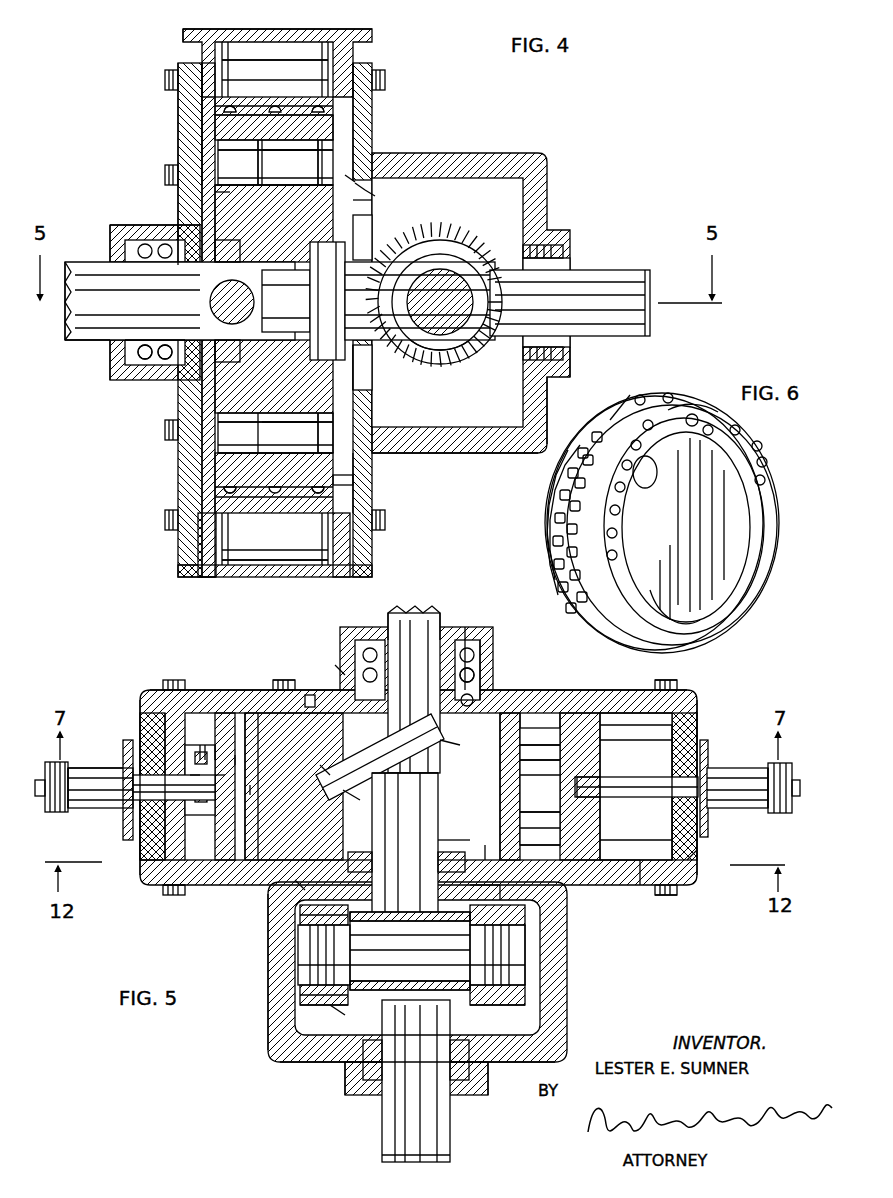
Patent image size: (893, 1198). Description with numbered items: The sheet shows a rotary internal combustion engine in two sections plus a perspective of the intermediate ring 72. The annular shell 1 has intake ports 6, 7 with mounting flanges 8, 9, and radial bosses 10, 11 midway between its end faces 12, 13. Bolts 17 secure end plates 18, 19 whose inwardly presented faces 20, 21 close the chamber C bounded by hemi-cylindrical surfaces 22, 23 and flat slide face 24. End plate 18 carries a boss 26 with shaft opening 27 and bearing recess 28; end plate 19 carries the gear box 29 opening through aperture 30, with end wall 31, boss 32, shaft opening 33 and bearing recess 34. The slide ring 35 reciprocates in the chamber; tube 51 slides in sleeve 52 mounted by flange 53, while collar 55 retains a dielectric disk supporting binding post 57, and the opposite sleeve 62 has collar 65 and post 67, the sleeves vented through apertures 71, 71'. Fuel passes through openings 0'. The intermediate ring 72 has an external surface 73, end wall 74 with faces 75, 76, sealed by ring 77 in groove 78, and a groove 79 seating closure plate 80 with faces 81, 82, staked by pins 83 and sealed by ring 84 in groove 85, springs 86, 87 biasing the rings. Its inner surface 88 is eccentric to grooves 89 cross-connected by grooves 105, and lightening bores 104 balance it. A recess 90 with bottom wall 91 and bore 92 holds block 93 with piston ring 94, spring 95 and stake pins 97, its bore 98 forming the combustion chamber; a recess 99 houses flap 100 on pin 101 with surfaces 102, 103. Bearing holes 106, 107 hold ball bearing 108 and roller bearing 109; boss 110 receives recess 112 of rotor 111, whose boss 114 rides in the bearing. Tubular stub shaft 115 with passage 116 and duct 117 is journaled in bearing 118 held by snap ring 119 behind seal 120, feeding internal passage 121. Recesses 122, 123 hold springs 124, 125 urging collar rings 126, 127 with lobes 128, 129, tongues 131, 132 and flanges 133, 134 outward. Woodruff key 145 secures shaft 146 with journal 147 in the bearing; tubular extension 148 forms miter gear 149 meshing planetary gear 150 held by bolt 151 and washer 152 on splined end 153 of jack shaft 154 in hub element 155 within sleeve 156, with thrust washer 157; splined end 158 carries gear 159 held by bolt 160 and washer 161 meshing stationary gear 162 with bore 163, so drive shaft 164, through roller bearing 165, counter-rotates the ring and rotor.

In FIG. 4, the shell 1 is at (333, 32).
In FIG. 5, the shell 1 is at (138, 858).
In FIG. 4, the intake port 6 is at (265, 55).
In FIG. 4, the intake port 7 is at (278, 574).
In FIG. 4, the mounting flange 8 is at (372, 34).
In FIG. 4, the mounting flange 9 is at (192, 574).
In FIG. 5, the cylindrical boss 10 is at (140, 732).
In FIG. 5, the cylindrical boss 11 is at (698, 738).
In FIG. 5, the end face 12 is at (152, 692).
In FIG. 5, the end face 13 is at (162, 882).
In FIG. 5, the bolts 17 is at (678, 683).
In FIG. 4, the end plate 18 is at (185, 104).
In FIG. 5, the end plate 18 is at (603, 692).
In FIG. 4, the end plate 19 is at (372, 120).
In FIG. 5, the end plate 19 is at (640, 862).
In FIG. 4, the inwardly presented face 20 is at (205, 130).
In FIG. 5, the inwardly presented face 20 is at (630, 712).
In FIG. 4, the inwardly presented face 21 is at (345, 142).
In FIG. 5, the inwardly presented face 21 is at (615, 862).
In FIG. 5, the hemi-cylindrical surface 22 is at (138, 840).
In FIG. 5, the hemi-cylindrical surface 23 is at (698, 858).
In FIG. 5, the flat slide face 24 is at (640, 722).
In FIG. 4, the boss 26 is at (170, 240).
In FIG. 5, the boss 26 is at (490, 655).
In FIG. 4, the shaft opening 27 is at (215, 335).
In FIG. 5, the shaft opening 27 is at (472, 698).
In FIG. 4, the bearing recess 28 is at (172, 355).
In FIG. 5, the bearing recess 28 is at (472, 670).
In FIG. 4, the gear box 29 is at (515, 453).
In FIG. 5, the gear box 29 is at (563, 1035).
In FIG. 4, the circular aperture 30 is at (365, 397).
In FIG. 5, the circular aperture 30 is at (515, 900).
In FIG. 4, the end wall 31 is at (540, 420).
In FIG. 5, the end wall 31 is at (322, 1062).
In FIG. 4, the boss 32 is at (562, 375).
In FIG. 5, the boss 32 is at (490, 1090).
In FIG. 4, the shaft opening 33 is at (562, 353).
In FIG. 4, the bearing recess 34 is at (562, 250).
In FIG. 4, the slide ring 35 is at (215, 505).
In FIG. 5, the slide ring 35 is at (598, 838).
In FIG. 5, the cylindrical tube 51 is at (145, 785).
In FIG. 5, the sleeve 52 is at (88, 810).
In FIG. 5, the flange 53 is at (126, 812).
In FIG. 5, the flange collar 55 is at (52, 812).
In FIG. 5, the binding post 57 is at (38, 788).
In FIG. 5, the sleeve 62 is at (730, 768).
In FIG. 5, the flange collar 65 is at (781, 798).
In FIG. 5, the binding post 67 is at (797, 782).
In FIG. 5, the vent aperture 71 is at (75, 768).
In FIG. 5, the vent aperture 71' is at (760, 801).
In FIG. 4, the intermediate ring 72 is at (205, 146).
In FIG. 6, the intermediate ring 72 is at (783, 522).
In FIG. 6, the external cylindrical surface 73 is at (552, 556).
In FIG. 5, the external cylindrical surface 73 is at (604, 772).
In FIG. 6, the end wall 74 is at (693, 528).
In FIG. 5, the end wall 74 is at (530, 705).
In FIG. 4, the outer face 75 is at (210, 186).
In FIG. 6, the outer face 75 is at (628, 402).
In FIG. 5, the outer face 75 is at (562, 712).
In FIG. 4, the inner face 76 is at (222, 167).
In FIG. 6, the inner face 76 is at (688, 570).
In FIG. 5, the inner face 76 is at (540, 769).
In FIG. 4, the sealing ring 77 is at (185, 228).
In FIG. 4, the axial groove 78 is at (205, 383).
In FIG. 6, the circular groove 79 is at (762, 568).
In FIG. 4, the closure plate 80 is at (358, 456).
In FIG. 5, the closure plate 80 is at (530, 845).
In FIG. 4, the outer face 81 is at (340, 432).
In FIG. 4, the inner face 82 is at (320, 427).
In FIG. 4, the pins 83 is at (350, 480).
In FIG. 4, the sealing ring 84 is at (362, 186).
In FIG. 4, the circular groove 85 is at (372, 192).
In FIG. 4, the ribbon-steel spring 86 is at (190, 350).
In FIG. 4, the ribbon-steel spring 87 is at (358, 198).
In FIG. 4, the inner surface 88 is at (235, 456).
In FIG. 6, the inner surface 88 is at (692, 606).
In FIG. 5, the inner surface 88 is at (560, 787).
In FIG. 4, the peripheral grooves 89 is at (278, 108).
In FIG. 6, the peripheral grooves 89 is at (566, 488).
In FIG. 5, the peripheral grooves 89 is at (605, 745).
In FIG. 5, the cylindrical recess 90 is at (232, 725).
In FIG. 5, the bottom wall 91 is at (218, 750).
In FIG. 5, the radial bore 92 is at (240, 718).
In FIG. 6, the cylindrical block 93 is at (640, 395).
In FIG. 5, the cylindrical block 93 is at (180, 708).
In FIG. 5, the piston ring 94 is at (208, 722).
In FIG. 5, the expander spring 95 is at (205, 750).
In FIG. 5, the stake pins 97 is at (220, 782).
In FIG. 6, the cylindrical bore 98 is at (668, 393).
In FIG. 5, the cylindrical bore 98 is at (195, 782).
In FIG. 6, the recess 99 is at (665, 445).
In FIG. 6, the flap 100 is at (692, 414).
In FIG. 5, the flap 100 is at (240, 762).
In FIG. 6, the pin 101 is at (712, 408).
In FIG. 5, the inner peripheral surface 102 is at (262, 718).
In FIG. 5, the outer peripheral surface 103 is at (278, 690).
In FIG. 6, the axial bores 104 is at (764, 480).
In FIG. 6, the axial grooves 105 is at (575, 475).
In FIG. 5, the bearing-hole 106 is at (342, 670).
In FIG. 5, the bearing-hole 107 is at (466, 838).
In FIG. 4, the ball-bearing 108 is at (220, 358).
In FIG. 5, the ball-bearing 108 is at (435, 742).
In FIG. 5, the roller bearing 109 is at (358, 858).
In FIG. 4, the circular boss 110 is at (372, 228).
In FIG. 5, the circular boss 110 is at (490, 845).
In FIG. 5, the rotor 111 is at (300, 882).
In FIG. 5, the circular recess 112 is at (352, 795).
In FIG. 4, the boss 114 is at (222, 252).
In FIG. 4, the tubular stub shaft 115 is at (108, 335).
In FIG. 5, the tubular stub shaft 115 is at (462, 625).
In FIG. 4, the axial passage 116 is at (115, 305).
In FIG. 5, the axial passage 116 is at (425, 622).
In FIG. 4, the duct 117 is at (85, 262).
In FIG. 5, the duct 117 is at (390, 615).
In FIG. 4, the compound ball-bearing 118 is at (148, 358).
In FIG. 5, the compound ball-bearing 118 is at (366, 642).
In FIG. 4, the snap ring 119 is at (140, 240).
In FIG. 5, the snap ring 119 is at (485, 648).
In FIG. 4, the rotary seal 120 is at (112, 362).
In FIG. 5, the rotary seal 120 is at (478, 640).
In FIG. 5, the internal passage 121 is at (390, 773).
In FIG. 5, the annular recess 122 is at (540, 739).
In FIG. 5, the annular recess 123 is at (505, 886).
In FIG. 5, the expander spring 124 is at (508, 760).
In FIG. 5, the expander spring 125 is at (328, 772).
In FIG. 4, the collar ring 126 is at (258, 190).
In FIG. 5, the collar ring 126 is at (540, 754).
In FIG. 4, the collar ring 127 is at (324, 190).
In FIG. 5, the collar ring 127 is at (540, 801).
In FIG. 5, the lobe 128 is at (312, 697).
In FIG. 5, the lobe 129 is at (255, 792).
In FIG. 4, the tongues 131 is at (281, 182).
In FIG. 4, the tongues 132 is at (275, 422).
In FIG. 4, the annular flange 133 is at (222, 193).
In FIG. 4, the annular flange 134 is at (352, 180).
In FIG. 4, the Woodruff key 145 is at (270, 284).
In FIG. 4, the shaft 146 is at (310, 250).
In FIG. 5, the shaft 146 is at (385, 765).
In FIG. 4, the journal-portion 147 is at (345, 293).
In FIG. 5, the journal-portion 147 is at (412, 825).
In FIG. 4, the tubular extension 148 is at (418, 262).
In FIG. 4, the miter gear 149 is at (380, 368).
In FIG. 5, the planetary miter gear 150 is at (312, 1002).
In FIG. 5, the bolt 151 is at (300, 950).
In FIG. 5, the washer 152 is at (300, 920).
In FIG. 5, the splined end 153 is at (305, 972).
In FIG. 4, the jack shaft 154 is at (452, 278).
In FIG. 5, the jack shaft 154 is at (310, 988).
In FIG. 4, the hub element 155 is at (440, 366).
In FIG. 5, the hub element 155 is at (366, 922).
In FIG. 4, the antifriction sleeve 156 is at (475, 360).
In FIG. 5, the antifriction sleeve 156 is at (412, 922).
In FIG. 5, the thrust washer 157 is at (338, 1008).
In FIG. 5, the splined end 158 is at (515, 975).
In FIG. 5, the planetary miter gear 159 is at (505, 1010).
In FIG. 5, the bolt 160 is at (530, 950).
In FIG. 5, the washer 161 is at (528, 926).
In FIG. 5, the stationary miter gear 162 is at (500, 1055).
In FIG. 5, the bore 163 is at (386, 1028).
In FIG. 4, the drive shaft 164 is at (622, 275).
In FIG. 5, the drive shaft 164 is at (450, 1135).
In FIG. 5, the roller bearing 165 is at (365, 1085).
In FIG. 4, the elongated openings 0' is at (275, 78).
In FIG. 5, the chamber C is at (650, 868).